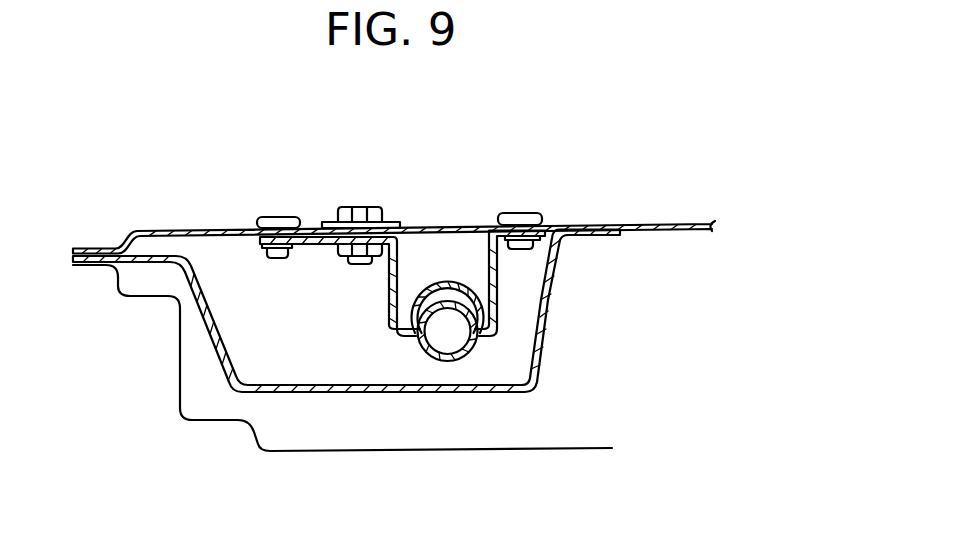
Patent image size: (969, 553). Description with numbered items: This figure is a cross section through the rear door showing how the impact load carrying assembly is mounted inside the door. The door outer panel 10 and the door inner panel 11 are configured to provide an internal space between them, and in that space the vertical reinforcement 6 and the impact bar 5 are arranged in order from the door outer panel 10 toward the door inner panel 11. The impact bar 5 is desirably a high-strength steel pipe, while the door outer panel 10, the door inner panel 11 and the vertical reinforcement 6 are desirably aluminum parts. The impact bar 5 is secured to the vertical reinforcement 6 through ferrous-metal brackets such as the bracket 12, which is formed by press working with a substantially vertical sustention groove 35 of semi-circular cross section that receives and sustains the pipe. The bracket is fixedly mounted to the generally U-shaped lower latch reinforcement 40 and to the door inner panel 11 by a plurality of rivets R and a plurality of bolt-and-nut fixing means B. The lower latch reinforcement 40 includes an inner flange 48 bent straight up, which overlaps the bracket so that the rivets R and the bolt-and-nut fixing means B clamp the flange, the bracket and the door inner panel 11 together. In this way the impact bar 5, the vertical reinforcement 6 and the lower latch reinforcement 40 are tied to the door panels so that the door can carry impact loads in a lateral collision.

The impact bar 5 is at (448, 361).
The vertical reinforcement 6 is at (544, 333).
The door outer panel 10 is at (537, 449).
The door inner panel 11 is at (676, 225).
The upper bracket 12 is at (390, 284).
The sustention groove 35 is at (451, 283).
The lower latch reinforcement 40 is at (328, 200).
The inner flange 48 is at (313, 237).
The bolt-and-nut fixing means B is at (384, 207).
The rivet R is at (267, 216).